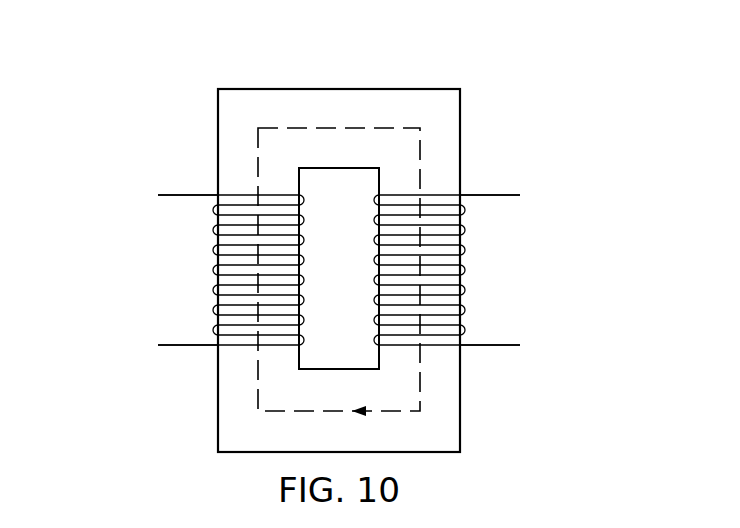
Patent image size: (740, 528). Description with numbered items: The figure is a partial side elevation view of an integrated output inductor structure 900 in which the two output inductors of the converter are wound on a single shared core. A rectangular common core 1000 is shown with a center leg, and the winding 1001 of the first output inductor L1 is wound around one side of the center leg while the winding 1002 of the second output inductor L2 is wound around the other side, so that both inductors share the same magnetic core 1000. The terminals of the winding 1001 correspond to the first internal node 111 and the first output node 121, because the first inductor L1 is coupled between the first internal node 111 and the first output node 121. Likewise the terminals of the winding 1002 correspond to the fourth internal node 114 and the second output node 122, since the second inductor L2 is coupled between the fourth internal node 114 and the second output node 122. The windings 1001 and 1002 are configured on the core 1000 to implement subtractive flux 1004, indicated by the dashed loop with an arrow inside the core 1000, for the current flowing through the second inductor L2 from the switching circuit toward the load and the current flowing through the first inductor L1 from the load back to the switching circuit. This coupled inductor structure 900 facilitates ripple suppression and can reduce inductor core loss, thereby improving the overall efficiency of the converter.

The integrated output inductor structure 900 is at (128, 129).
The common core 1000 is at (388, 89).
The subtractive flux 1004 is at (340, 128).
The winding 1001 is at (197, 270).
The winding 1002 is at (480, 268).
The first internal node 111 is at (188, 195).
The first output node 121 is at (188, 346).
The second output node 122 is at (488, 194).
The fourth internal node 114 is at (490, 346).
The first output inductor L1 is at (148, 230).
The second output inductor L2 is at (530, 230).